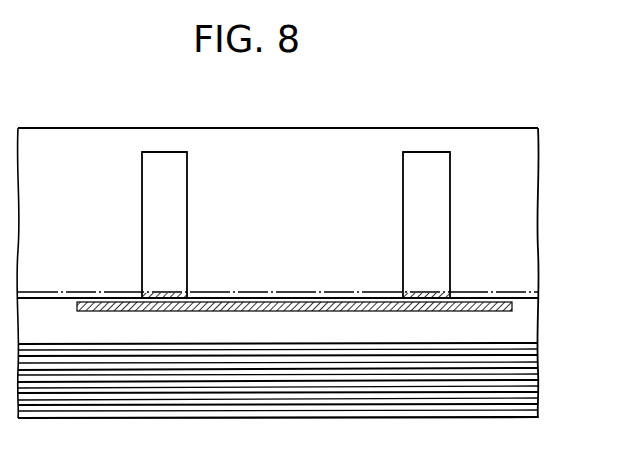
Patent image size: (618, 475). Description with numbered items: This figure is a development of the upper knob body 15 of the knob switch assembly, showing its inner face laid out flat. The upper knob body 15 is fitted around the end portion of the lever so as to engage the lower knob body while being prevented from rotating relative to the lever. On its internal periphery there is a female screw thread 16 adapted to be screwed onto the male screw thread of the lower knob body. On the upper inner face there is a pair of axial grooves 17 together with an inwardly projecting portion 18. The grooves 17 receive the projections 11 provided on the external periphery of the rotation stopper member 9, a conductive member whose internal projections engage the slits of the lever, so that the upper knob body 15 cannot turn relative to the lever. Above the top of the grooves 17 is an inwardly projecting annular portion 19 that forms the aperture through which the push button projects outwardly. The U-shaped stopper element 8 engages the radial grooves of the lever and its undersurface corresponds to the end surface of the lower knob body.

The stopper element 8 is at (276, 300).
The rotation stopper member 9 is at (320, 300).
The projections 11 is at (170, 298).
The upper knob body 15 is at (495, 128).
The female screw thread 16 is at (392, 395).
The axial grooves 17 is at (172, 212).
The inwardly projecting portion 18 is at (315, 190).
The inwardly projecting annular portion 19 is at (164, 152).